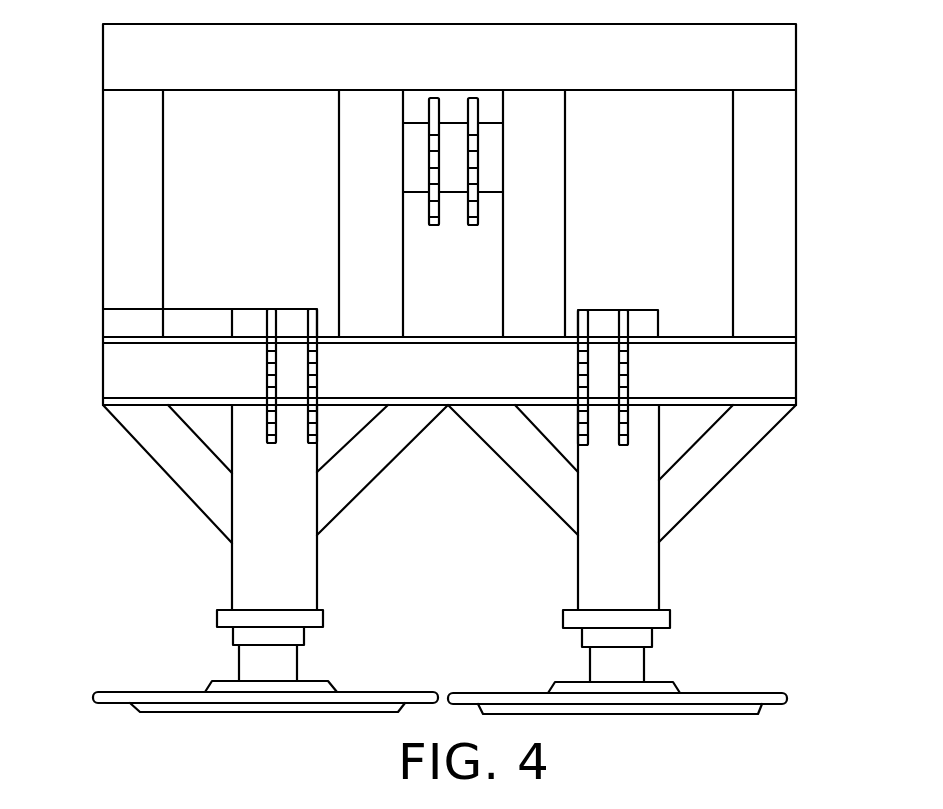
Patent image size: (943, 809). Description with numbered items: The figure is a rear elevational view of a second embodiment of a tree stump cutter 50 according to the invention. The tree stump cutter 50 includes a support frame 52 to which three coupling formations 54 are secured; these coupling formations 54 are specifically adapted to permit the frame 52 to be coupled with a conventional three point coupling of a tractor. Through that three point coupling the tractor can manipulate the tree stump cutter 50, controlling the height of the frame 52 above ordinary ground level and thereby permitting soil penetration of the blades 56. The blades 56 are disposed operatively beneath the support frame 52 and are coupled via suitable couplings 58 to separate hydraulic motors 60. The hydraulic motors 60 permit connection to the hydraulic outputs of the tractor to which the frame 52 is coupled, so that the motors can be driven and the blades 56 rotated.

The tree stump cutter 50 is at (735, 481).
The support frame 52 is at (785, 372).
The coupling formations 54 is at (479, 222).
The blades 56 is at (395, 692).
The couplings 58 is at (317, 617).
The hydraulic motors 60 is at (253, 322).